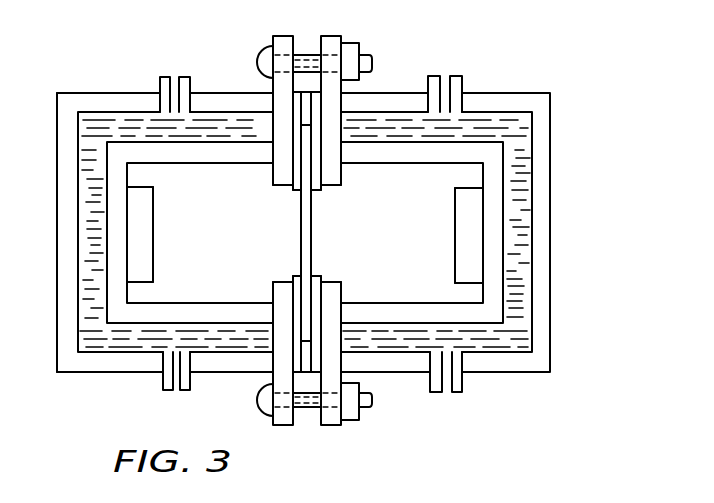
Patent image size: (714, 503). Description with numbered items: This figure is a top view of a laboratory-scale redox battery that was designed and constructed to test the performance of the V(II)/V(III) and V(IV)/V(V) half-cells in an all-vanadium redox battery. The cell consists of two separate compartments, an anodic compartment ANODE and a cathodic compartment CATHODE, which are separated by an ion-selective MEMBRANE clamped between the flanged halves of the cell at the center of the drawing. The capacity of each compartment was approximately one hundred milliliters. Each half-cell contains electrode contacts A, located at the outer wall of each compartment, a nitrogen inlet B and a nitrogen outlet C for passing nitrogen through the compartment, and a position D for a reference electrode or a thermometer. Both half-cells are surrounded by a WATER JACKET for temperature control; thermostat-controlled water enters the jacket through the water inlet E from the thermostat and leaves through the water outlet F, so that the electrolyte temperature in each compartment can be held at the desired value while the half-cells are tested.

The electrode contacts A is at (305, 235).
The nitrogen inlet B is at (304, 198).
The nitrogen outlet C is at (304, 269).
The reference electrode or thermometer D is at (304, 234).
The water inlet from thermostat E is at (312, 236).
The water outlet F is at (311, 232).
The ion-selective membrane MEMBRANE is at (313, 214).
The cathodic compartment CATHODE is at (472, 190).
The anodic compartment ANODE is at (138, 270).
The water jacket WATER JACKET is at (508, 330).